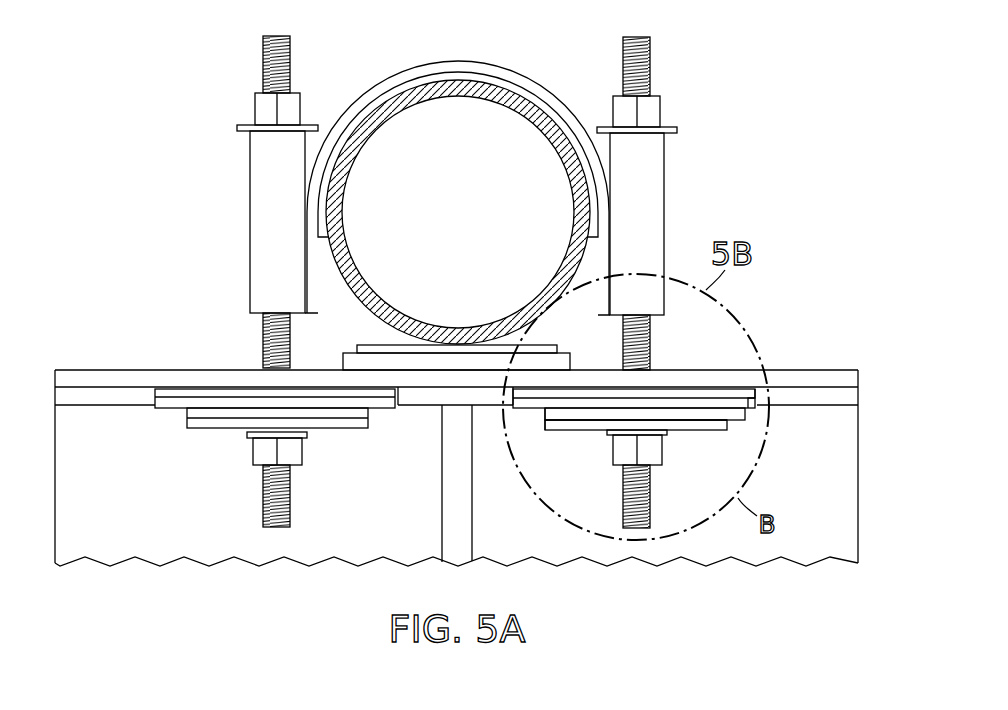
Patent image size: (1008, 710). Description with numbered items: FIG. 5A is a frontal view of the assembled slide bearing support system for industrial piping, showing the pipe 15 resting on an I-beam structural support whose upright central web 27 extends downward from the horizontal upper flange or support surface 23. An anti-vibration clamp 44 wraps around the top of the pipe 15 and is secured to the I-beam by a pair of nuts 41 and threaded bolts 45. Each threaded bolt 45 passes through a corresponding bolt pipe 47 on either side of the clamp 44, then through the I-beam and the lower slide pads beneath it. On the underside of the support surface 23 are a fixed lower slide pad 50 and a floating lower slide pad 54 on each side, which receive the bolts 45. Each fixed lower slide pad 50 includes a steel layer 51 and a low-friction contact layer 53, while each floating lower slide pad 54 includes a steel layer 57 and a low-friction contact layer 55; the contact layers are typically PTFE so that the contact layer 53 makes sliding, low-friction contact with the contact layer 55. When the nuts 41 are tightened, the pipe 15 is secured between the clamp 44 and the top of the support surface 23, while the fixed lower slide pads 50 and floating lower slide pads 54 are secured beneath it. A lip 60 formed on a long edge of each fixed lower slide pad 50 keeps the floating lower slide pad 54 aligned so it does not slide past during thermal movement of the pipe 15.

The pipe 15 is at (444, 225).
The support surface 23 is at (838, 372).
The central web 27 is at (473, 510).
The nut 41 is at (255, 108).
The anti-vibration clamp 44 is at (474, 60).
The threaded bolt 45 is at (266, 44).
The bolt pipe 47 is at (250, 205).
The fixed lower slide pad 50 is at (175, 410).
The steel layer 51 is at (712, 386).
The low-friction contact layer 53 is at (740, 415).
The floating lower slide pad 54 is at (217, 430).
The low-friction contact layer 55 is at (540, 430).
The steel layer 57 is at (680, 432).
The lip 60 is at (396, 400).